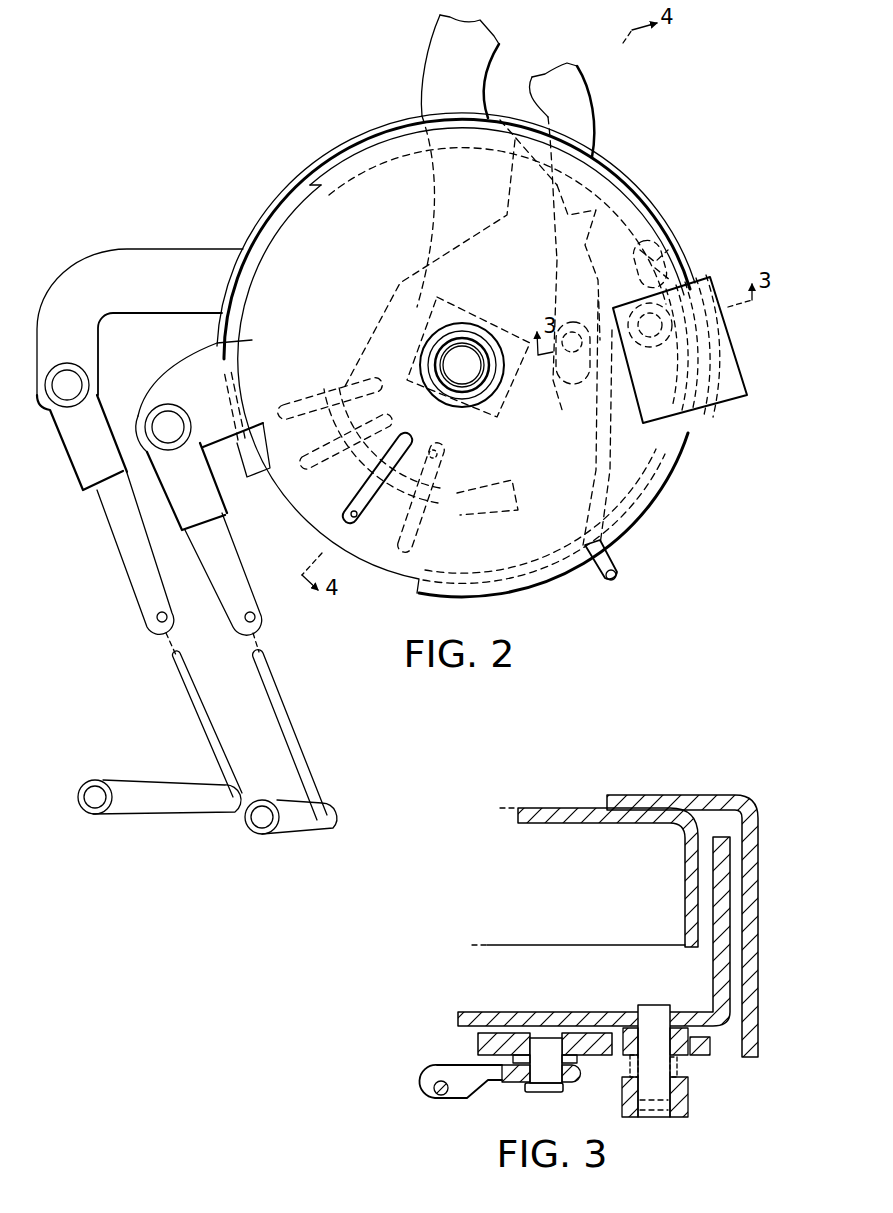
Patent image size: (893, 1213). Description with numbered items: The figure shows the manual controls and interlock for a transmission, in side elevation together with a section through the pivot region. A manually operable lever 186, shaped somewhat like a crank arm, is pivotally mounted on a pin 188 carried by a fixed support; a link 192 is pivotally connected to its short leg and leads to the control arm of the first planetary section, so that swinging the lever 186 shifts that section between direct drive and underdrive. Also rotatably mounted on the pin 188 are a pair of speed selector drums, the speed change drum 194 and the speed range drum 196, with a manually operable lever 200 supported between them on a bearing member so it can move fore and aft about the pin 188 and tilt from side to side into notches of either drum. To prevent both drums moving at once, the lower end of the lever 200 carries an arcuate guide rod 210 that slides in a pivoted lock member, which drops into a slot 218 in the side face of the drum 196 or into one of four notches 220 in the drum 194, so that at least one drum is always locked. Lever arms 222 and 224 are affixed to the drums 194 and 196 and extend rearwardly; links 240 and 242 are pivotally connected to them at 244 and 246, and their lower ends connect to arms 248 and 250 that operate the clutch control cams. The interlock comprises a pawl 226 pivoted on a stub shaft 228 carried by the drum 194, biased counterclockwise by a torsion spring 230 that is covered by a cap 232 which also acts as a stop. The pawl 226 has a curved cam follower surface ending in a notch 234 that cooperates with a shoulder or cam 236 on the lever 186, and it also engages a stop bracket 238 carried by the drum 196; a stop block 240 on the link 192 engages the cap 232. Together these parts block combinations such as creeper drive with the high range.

In FIG. 2, the manually operable lever 186 is at (490, 46).
In FIG. 3, the manually operable lever 186 is at (478, 1040).
In FIG. 2, the pin 188 is at (470, 352).
In FIG. 2, the link 192 is at (612, 560).
In FIG. 3, the link 192 is at (462, 1095).
In FIG. 2, the speed change drum 194 is at (325, 162).
In FIG. 3, the speed change drum 194 is at (565, 1011).
In FIG. 2, the speed range drum 196 is at (388, 168).
In FIG. 3, the speed range drum 196 is at (545, 822).
In FIG. 2, the manually operable lever 200 is at (595, 88).
In FIG. 2, the arcuate guide rod 210 is at (460, 506).
In FIG. 2, the slot 218 is at (357, 514).
In FIG. 2, the notches 220 is at (370, 395).
In FIG. 2, the lever arm 222 is at (148, 248).
In FIG. 2, the lever arm 224 is at (195, 364).
In FIG. 2, the pawl 226 is at (668, 262).
In FIG. 3, the pawl 226 is at (708, 1050).
In FIG. 2, the stub shaft 228 is at (658, 347).
In FIG. 3, the stub shaft 228 is at (650, 1010).
In FIG. 3, the torsion spring 230 is at (686, 1066).
In FIG. 2, the cap 232 is at (682, 283).
In FIG. 3, the cap 232 is at (688, 1100).
In FIG. 2, the notch 234 is at (612, 322).
In FIG. 2, the shoulder or cam 236 is at (568, 210).
In FIG. 2, the stop bracket 238 is at (738, 381).
In FIG. 3, the stop bracket 238 is at (756, 844).
In FIG. 2, the link 240 is at (590, 470).
In FIG. 2, the link 242 is at (232, 619).
In FIG. 2, the pivotal connection 244 is at (67, 372).
In FIG. 2, the pivotal connection 246 is at (171, 415).
In FIG. 2, the arm 248 is at (175, 808).
In FIG. 2, the arm 250 is at (282, 830).